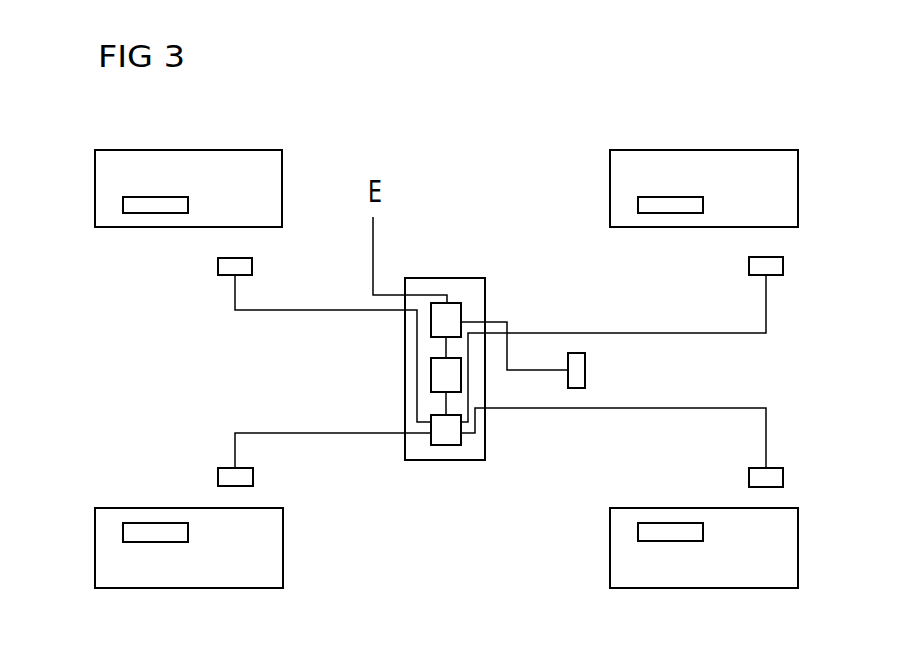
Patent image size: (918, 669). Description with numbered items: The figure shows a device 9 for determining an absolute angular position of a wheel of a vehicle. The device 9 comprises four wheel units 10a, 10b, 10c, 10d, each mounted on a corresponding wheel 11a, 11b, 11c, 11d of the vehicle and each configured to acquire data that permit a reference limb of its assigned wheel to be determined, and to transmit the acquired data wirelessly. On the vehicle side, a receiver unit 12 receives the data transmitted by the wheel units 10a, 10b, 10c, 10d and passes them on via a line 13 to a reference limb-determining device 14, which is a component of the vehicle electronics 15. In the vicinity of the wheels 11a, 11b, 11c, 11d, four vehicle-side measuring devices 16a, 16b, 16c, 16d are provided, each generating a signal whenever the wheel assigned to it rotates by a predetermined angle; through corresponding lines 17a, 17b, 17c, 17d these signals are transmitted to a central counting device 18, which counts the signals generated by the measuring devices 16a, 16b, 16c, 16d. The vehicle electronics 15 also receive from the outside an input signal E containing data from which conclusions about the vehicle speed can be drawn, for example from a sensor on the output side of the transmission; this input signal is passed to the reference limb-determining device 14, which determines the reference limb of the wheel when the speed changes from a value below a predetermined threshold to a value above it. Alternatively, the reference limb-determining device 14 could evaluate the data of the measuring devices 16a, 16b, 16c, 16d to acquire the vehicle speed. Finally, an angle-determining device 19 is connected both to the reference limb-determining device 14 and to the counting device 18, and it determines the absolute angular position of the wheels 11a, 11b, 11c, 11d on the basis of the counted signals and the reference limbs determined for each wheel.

The device 9 is at (822, 67).
The wheel unit 10a is at (188, 207).
The wheel unit 10b is at (703, 207).
The wheel unit 10c is at (188, 532).
The wheel unit 10d is at (703, 533).
The wheel 11a is at (182, 160).
The wheel 11b is at (695, 160).
The wheel 11c is at (182, 575).
The wheel 11d is at (697, 575).
The receiver unit 12 is at (587, 378).
The line 13 is at (540, 373).
The reference limb-determining device 14 is at (453, 313).
The vehicle electronics 15 is at (452, 288).
The measuring device 16a is at (218, 268).
The measuring device 16b is at (783, 265).
The measuring device 16c is at (218, 477).
The measuring device 16d is at (783, 477).
The line 17a is at (233, 292).
The line 17b is at (770, 292).
The line 17c is at (233, 450).
The line 17d is at (770, 452).
The central counting device 18 is at (447, 437).
The angle-determining device 19 is at (440, 375).